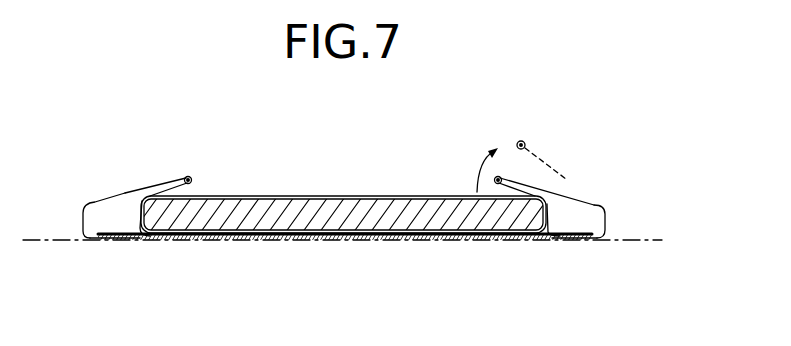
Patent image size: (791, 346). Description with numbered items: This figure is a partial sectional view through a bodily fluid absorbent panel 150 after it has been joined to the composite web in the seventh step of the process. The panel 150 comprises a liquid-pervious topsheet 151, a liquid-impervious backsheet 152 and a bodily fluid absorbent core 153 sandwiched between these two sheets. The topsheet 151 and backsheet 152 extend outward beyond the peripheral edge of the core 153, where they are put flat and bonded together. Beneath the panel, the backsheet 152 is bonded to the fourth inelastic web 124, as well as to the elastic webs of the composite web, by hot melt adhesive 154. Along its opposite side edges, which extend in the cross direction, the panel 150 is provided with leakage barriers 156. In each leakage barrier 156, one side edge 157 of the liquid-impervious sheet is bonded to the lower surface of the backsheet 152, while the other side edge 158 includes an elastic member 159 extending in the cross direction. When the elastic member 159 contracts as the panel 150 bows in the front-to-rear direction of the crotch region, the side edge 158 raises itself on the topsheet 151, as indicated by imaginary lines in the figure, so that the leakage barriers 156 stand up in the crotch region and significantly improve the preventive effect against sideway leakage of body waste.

The fourth inelastic web 124 is at (652, 238).
The bodily fluid absorbent panel 150 is at (152, 137).
The liquid-pervious topsheet 151 is at (245, 196).
The liquid-impervious backsheet 152 is at (215, 234).
The bodily fluid absorbent core 153 is at (298, 218).
The hot melt adhesive 154 is at (393, 240).
The leakage barrier 156 is at (112, 191).
The one side edge of the liquid-impervious sheet 157 is at (88, 238).
The other side edge 158 is at (142, 191).
The elastic member 159 is at (500, 176).